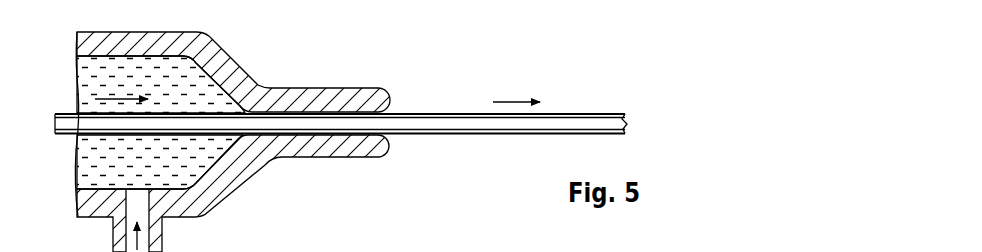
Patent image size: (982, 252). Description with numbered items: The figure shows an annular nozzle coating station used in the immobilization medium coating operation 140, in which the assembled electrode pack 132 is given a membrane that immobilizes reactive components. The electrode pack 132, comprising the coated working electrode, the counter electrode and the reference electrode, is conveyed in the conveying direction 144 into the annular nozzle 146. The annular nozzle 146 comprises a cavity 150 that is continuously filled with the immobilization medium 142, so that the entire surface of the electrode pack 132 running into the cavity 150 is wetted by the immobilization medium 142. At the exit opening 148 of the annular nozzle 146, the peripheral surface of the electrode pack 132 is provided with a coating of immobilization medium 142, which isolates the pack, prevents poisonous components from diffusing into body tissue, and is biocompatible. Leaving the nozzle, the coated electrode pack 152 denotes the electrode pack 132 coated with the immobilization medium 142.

The immobilization medium coating operation 140 is at (250, 69).
The immobilization medium 142 is at (108, 70).
The conveying direction 144 is at (95, 99).
The electrode pack 132 is at (72, 124).
The annular nozzle 146 is at (274, 140).
The exit opening 148 is at (378, 134).
The cavity 150 is at (72, 169).
The coated electrode pack 152 is at (595, 110).